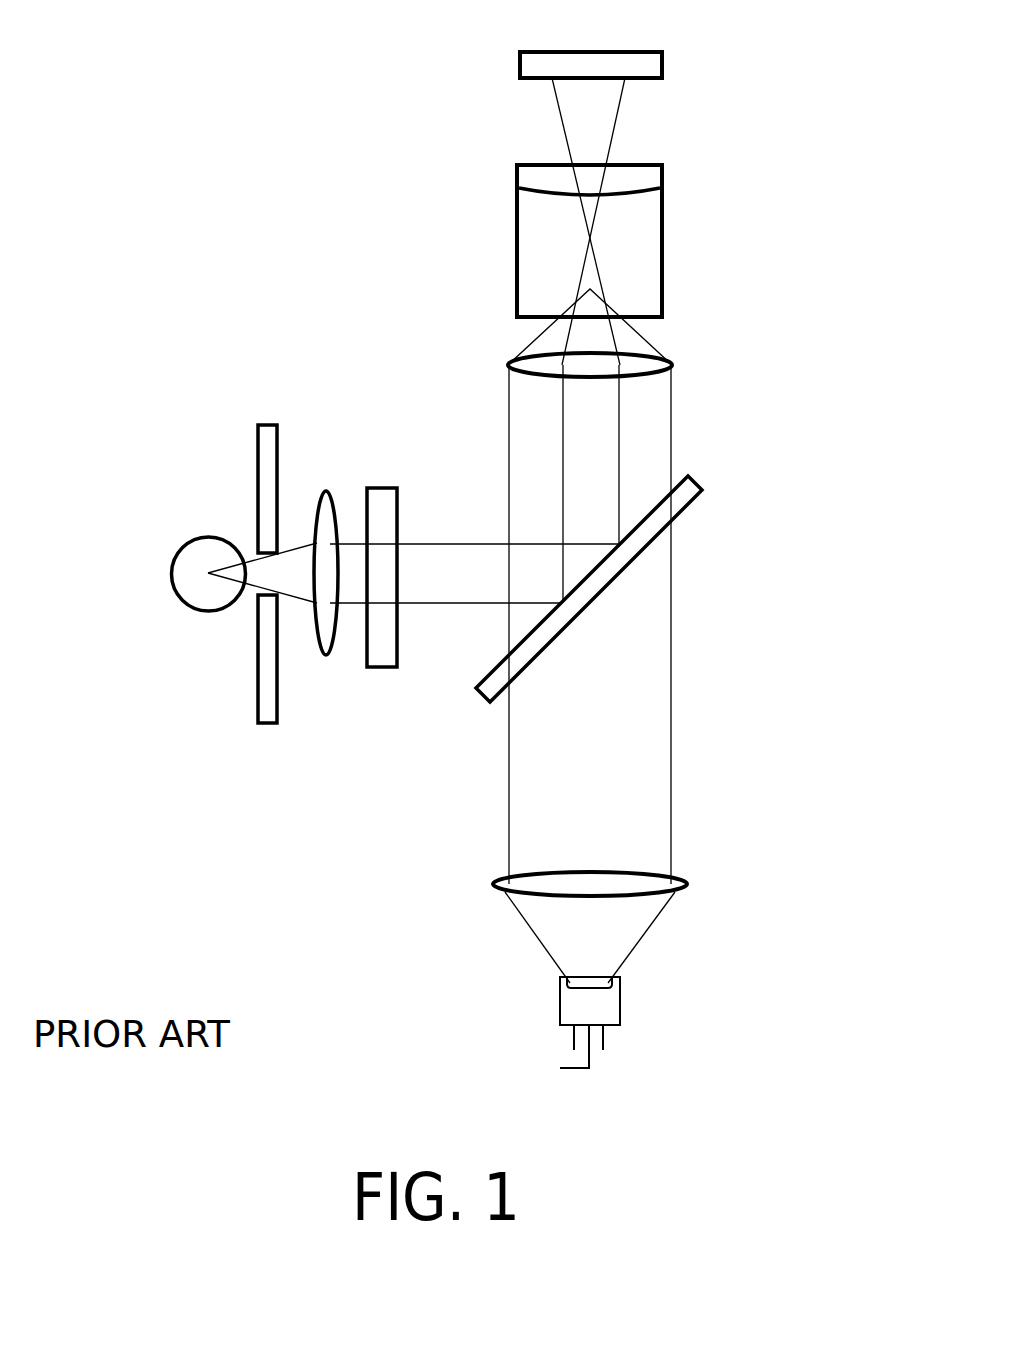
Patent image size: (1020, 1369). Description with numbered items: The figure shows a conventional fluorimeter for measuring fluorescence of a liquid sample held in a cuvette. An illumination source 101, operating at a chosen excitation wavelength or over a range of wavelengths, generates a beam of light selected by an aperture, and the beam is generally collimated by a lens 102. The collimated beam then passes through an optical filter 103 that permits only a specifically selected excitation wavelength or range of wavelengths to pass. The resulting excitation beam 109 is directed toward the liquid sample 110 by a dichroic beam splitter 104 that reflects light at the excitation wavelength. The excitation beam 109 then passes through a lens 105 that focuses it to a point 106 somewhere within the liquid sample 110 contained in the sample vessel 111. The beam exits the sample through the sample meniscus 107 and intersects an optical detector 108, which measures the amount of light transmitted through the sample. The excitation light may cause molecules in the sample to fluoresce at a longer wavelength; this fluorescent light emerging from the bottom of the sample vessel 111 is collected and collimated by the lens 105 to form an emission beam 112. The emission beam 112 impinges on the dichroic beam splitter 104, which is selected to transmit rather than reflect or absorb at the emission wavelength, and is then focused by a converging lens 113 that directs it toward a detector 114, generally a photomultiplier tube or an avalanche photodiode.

The illumination source 101 is at (165, 542).
The lens 102 is at (325, 653).
The optical filter 103 is at (370, 480).
The dichroic beam splitter 104 is at (692, 518).
The lens 105 is at (506, 366).
The point 106 is at (593, 237).
The sample meniscus 107 is at (635, 192).
The optical detector 108 is at (518, 65).
The excitation beam 109 is at (475, 563).
The liquid sample 110 is at (538, 225).
The sample vessel 111 is at (512, 175).
The emission beam 112 is at (655, 415).
The converging lens 113 is at (495, 887).
The detector 114 is at (623, 1010).